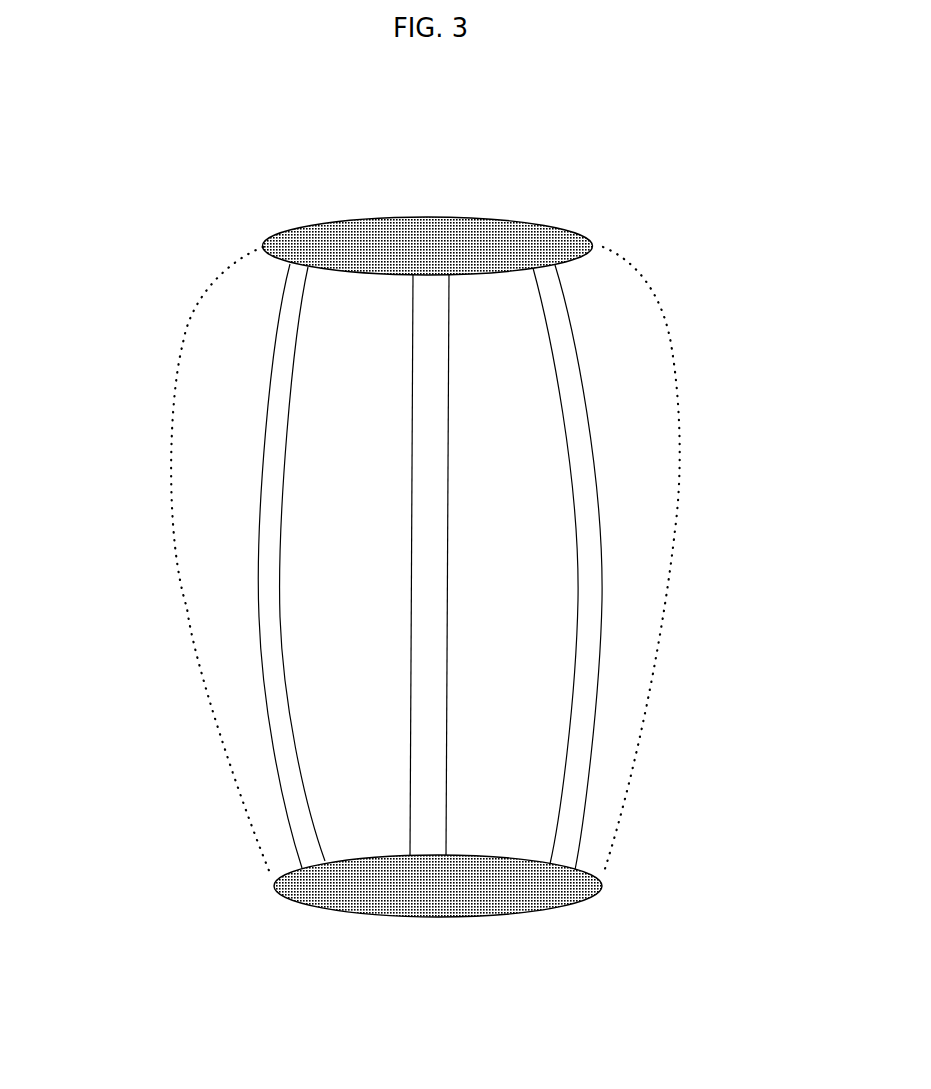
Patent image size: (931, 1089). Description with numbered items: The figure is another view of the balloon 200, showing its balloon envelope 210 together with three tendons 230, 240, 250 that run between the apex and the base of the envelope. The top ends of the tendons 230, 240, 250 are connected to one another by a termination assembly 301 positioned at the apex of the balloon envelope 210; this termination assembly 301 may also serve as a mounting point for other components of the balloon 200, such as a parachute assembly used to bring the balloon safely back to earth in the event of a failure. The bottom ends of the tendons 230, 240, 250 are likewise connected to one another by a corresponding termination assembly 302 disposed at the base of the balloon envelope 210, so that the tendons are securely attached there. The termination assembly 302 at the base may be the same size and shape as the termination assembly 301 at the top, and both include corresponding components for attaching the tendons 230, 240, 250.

The balloon 200 is at (82, 203).
The balloon envelope 210 is at (678, 400).
The tendon 230 is at (267, 410).
The tendon 240 is at (412, 498).
The tendon 250 is at (578, 560).
The termination assembly 301 is at (473, 250).
The termination assembly 302 is at (383, 898).